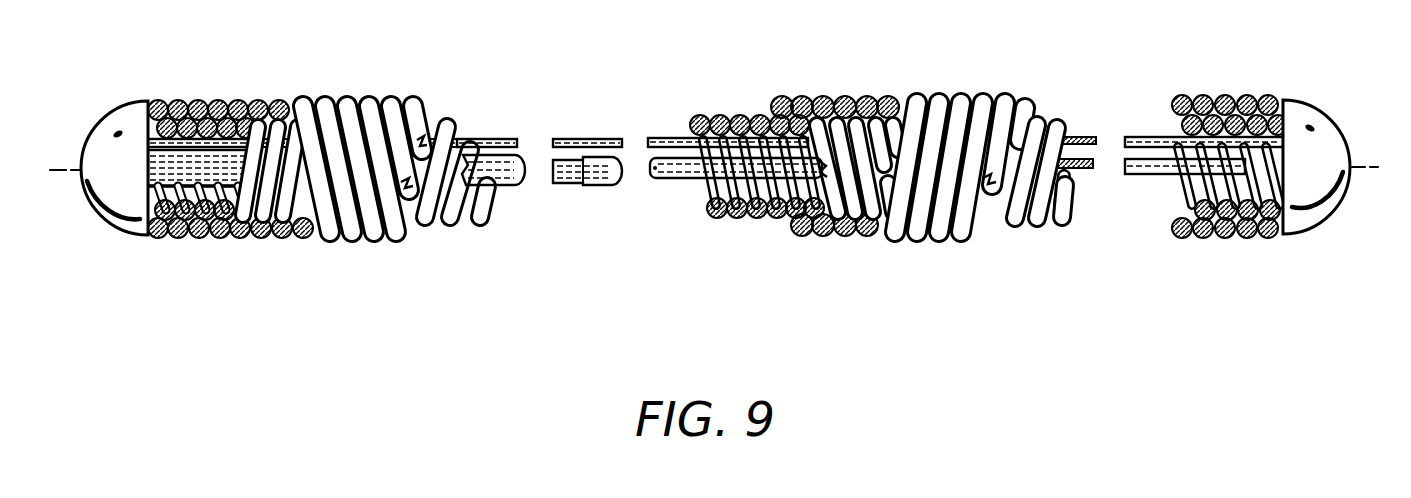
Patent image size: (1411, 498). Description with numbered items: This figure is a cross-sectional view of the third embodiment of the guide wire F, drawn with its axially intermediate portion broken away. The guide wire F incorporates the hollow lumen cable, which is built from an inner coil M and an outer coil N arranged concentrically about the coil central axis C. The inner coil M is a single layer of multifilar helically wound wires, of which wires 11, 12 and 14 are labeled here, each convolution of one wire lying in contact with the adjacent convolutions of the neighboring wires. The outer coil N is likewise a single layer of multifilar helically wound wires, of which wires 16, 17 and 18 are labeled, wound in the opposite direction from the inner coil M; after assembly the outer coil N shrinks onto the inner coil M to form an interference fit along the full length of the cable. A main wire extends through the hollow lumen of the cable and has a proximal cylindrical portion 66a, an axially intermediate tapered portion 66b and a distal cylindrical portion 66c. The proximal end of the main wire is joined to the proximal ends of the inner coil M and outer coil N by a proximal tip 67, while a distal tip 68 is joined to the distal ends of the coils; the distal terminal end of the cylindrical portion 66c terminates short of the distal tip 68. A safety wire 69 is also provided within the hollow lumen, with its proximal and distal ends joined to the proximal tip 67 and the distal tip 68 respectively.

The wire 11 is at (713, 220).
The wire 12 is at (737, 220).
The wire 14 is at (773, 220).
The wire 16 is at (327, 238).
The wire 17 is at (350, 238).
The wire 18 is at (370, 238).
The cylindrical portion 66a is at (507, 187).
The axially intermediate tapered portion 66b is at (607, 187).
The cylindrical portion 66c is at (195, 178).
The proximal tip 67 is at (120, 232).
The distal tip 68 is at (1316, 208).
The safety wire 69 is at (566, 138).
The outer coil N is at (200, 101).
The guide wire F is at (335, 164).
The inner coil M is at (744, 165).
The coil central axis C is at (42, 170).